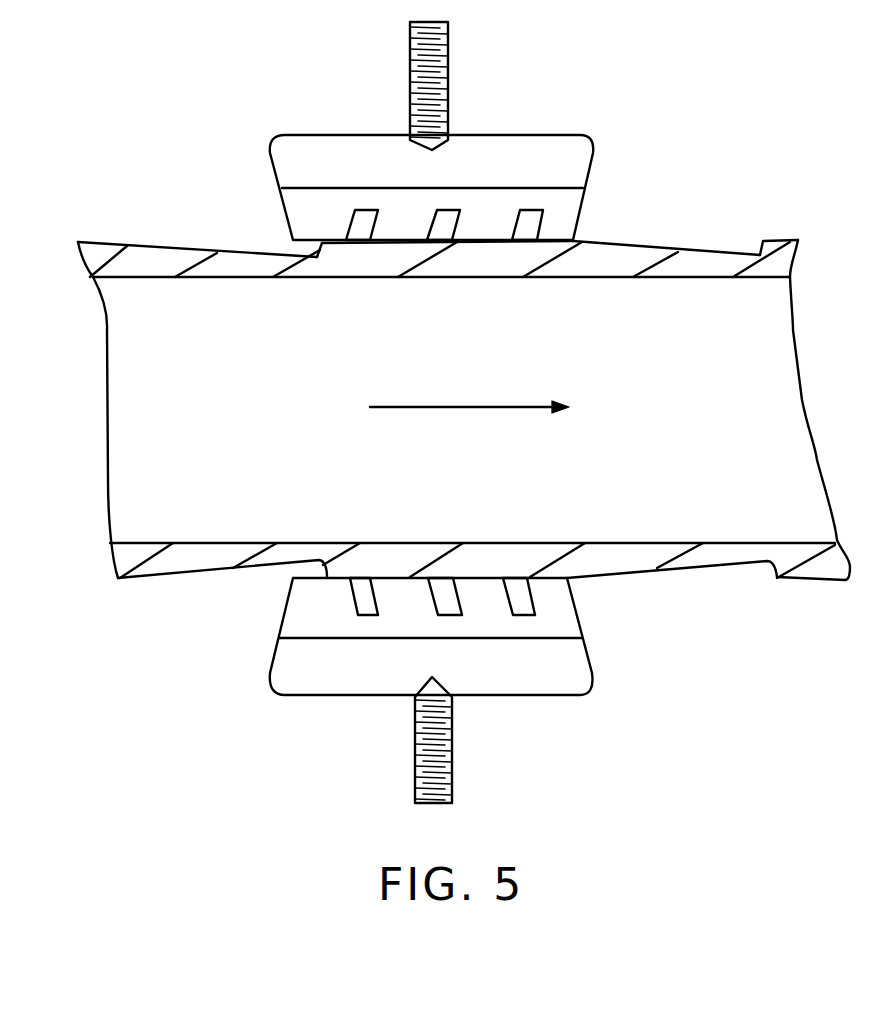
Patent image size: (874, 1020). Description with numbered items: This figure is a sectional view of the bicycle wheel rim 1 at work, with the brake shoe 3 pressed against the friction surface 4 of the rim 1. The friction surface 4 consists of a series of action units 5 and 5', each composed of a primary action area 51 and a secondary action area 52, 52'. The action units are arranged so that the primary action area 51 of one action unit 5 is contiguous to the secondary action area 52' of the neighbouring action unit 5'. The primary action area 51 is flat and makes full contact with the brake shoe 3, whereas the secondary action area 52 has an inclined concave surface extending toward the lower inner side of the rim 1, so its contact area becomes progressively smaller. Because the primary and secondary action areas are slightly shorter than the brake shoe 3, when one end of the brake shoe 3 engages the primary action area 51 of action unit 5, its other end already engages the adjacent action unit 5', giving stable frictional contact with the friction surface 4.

The rim 1 is at (464, 341).
The brake shoe 3 is at (535, 165).
The friction surface 4 is at (775, 213).
The action unit 5 is at (666, 205).
The action unit 5' is at (197, 191).
The primary action area 51 is at (492, 242).
The secondary action area 52 is at (756, 201).
The secondary action area 52' is at (261, 216).